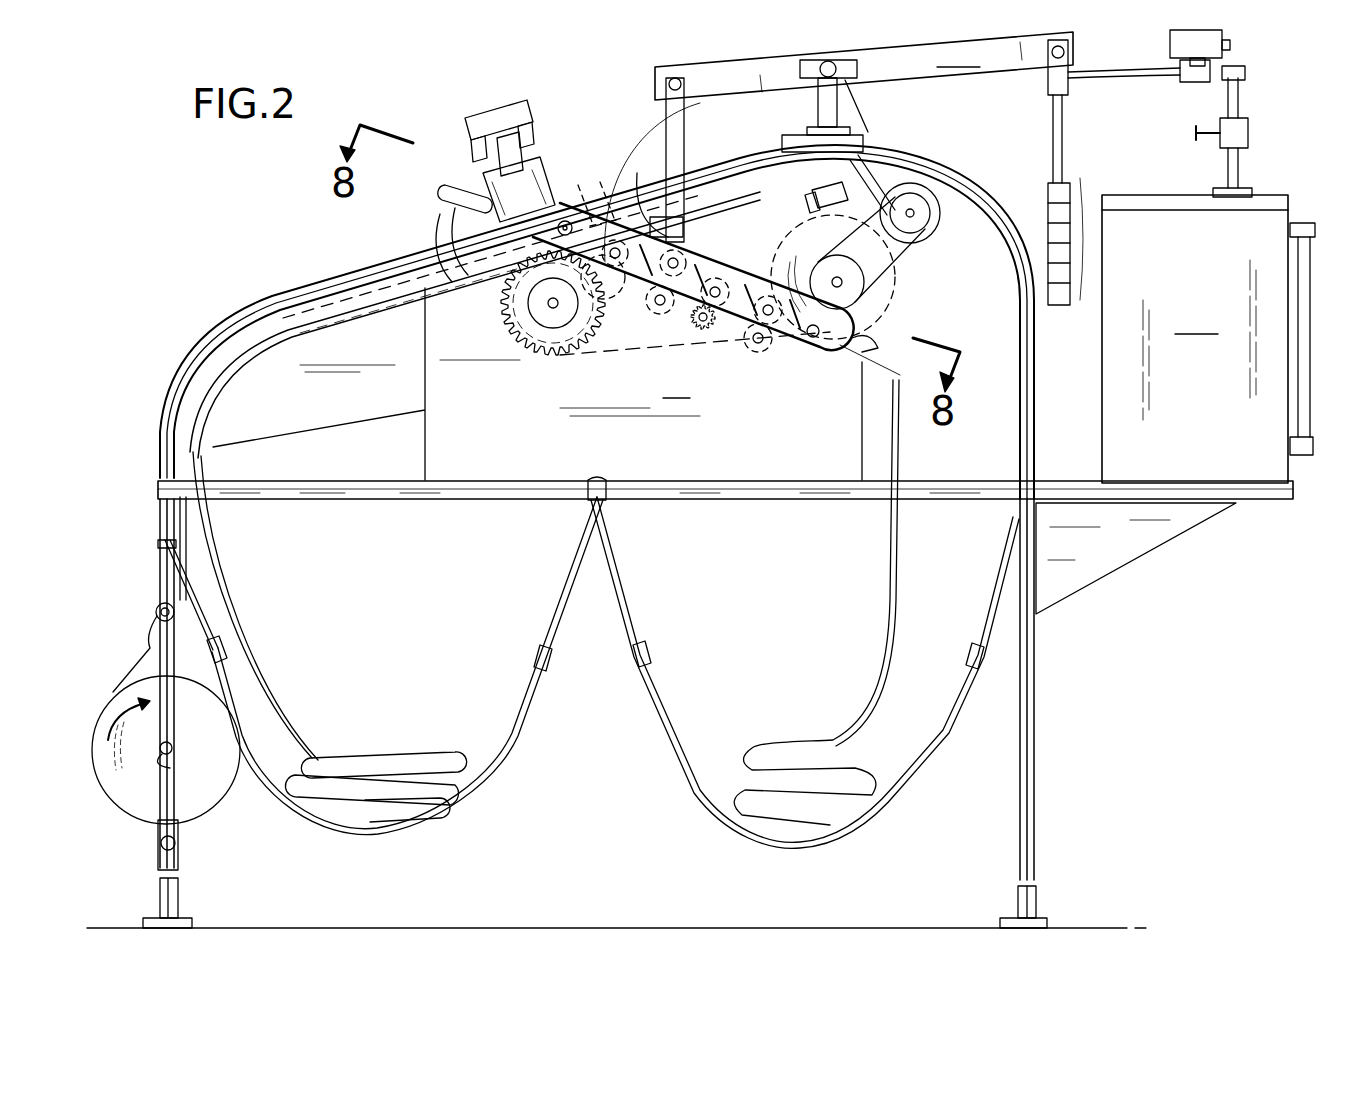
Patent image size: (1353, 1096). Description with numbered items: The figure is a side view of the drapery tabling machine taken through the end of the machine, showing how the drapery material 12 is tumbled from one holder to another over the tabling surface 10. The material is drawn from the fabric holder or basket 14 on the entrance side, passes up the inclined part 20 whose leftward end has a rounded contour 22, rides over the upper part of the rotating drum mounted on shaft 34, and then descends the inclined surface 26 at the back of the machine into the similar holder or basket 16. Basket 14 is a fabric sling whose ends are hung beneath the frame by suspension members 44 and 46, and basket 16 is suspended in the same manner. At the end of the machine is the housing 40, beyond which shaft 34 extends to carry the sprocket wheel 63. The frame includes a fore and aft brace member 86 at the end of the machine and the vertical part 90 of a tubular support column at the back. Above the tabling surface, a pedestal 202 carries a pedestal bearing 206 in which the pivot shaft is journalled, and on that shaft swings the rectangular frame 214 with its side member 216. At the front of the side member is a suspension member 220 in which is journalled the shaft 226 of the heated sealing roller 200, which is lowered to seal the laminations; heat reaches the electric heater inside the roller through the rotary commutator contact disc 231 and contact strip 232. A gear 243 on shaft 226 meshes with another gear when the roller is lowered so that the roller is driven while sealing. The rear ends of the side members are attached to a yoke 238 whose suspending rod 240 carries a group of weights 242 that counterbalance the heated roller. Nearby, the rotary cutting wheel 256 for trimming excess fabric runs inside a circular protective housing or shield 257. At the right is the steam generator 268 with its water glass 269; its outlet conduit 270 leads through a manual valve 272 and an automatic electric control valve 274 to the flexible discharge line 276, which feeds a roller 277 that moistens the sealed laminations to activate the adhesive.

The tabling surface 10 is at (402, 296).
The drapery material 12 is at (262, 604).
The holder or basket 14 is at (510, 735).
The holder or basket 16 is at (678, 745).
The inclined part 20 is at (312, 320).
The rounded contour 22 is at (212, 410).
The inclined surface 26 is at (848, 350).
The shaft 34 is at (548, 303).
The housing 40 is at (537, 384).
The suspension member 44 is at (205, 618).
The suspension member 46 is at (557, 630).
The sprocket wheel 63 is at (505, 320).
The fore and aft brace member 86 is at (725, 500).
The vertical part 90 is at (1037, 800).
The heated sealing roller 200 is at (708, 262).
The pedestal 202 is at (818, 118).
The pedestal bearing 206 is at (825, 62).
The rectangular frame 214 is at (864, 52).
The side member 216 is at (900, 47).
The suspension member 220 is at (686, 140).
The shaft 226 is at (700, 328).
The rotary commutator contact disc 231 is at (618, 295).
The contact strip 232 is at (652, 182).
The yoke 238 is at (1070, 88).
The suspending rod 240 is at (1066, 140).
The weights 242 is at (1084, 200).
The gear 243 is at (700, 252).
The rotary cutting wheel 256 is at (815, 235).
The protective housing or shield 257 is at (893, 290).
The steam generator 268 is at (1195, 339).
The water glass 269 is at (1315, 432).
The outlet conduit 270 is at (1240, 165).
The manual valve 272 is at (1240, 130).
The automatic electric control valve 274 is at (1230, 52).
The flexible discharge line 276 is at (1118, 67).
The roller 277 is at (590, 205).